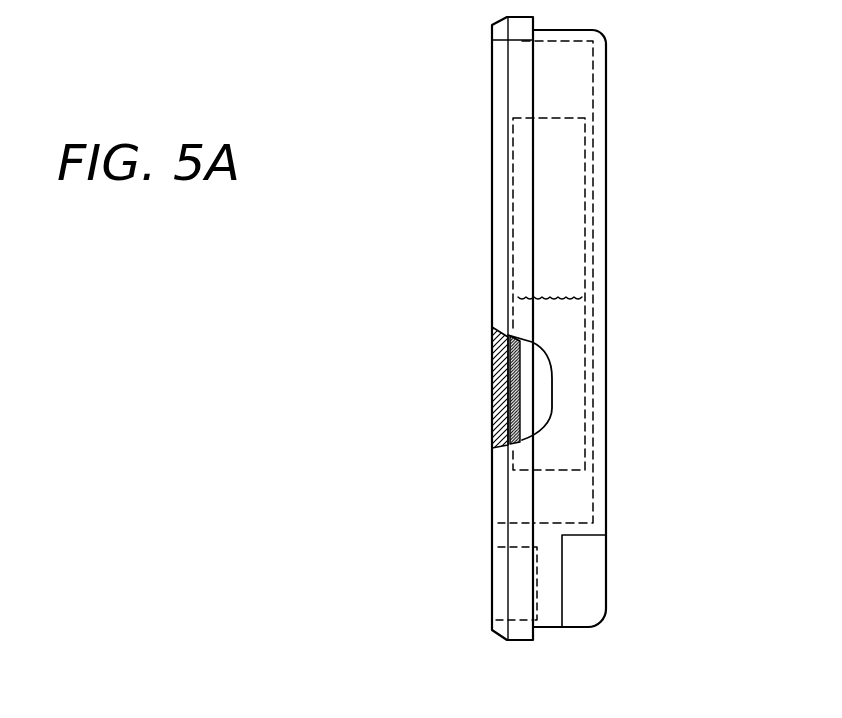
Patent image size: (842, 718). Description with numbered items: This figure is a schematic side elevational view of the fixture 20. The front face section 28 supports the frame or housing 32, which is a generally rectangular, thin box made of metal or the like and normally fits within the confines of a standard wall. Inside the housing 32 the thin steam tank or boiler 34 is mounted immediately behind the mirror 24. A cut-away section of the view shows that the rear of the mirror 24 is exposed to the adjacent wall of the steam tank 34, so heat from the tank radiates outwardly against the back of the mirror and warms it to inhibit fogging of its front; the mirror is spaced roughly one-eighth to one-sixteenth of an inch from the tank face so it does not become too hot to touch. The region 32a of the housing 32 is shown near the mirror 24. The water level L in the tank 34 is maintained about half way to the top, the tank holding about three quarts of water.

The fixture 20 is at (530, 328).
The mirror 24 is at (490, 383).
The front face section 28 is at (492, 482).
The housing 32 is at (607, 346).
The housing opening 32a is at (492, 352).
The steam tank 34 is at (593, 148).
The water level L is at (550, 293).